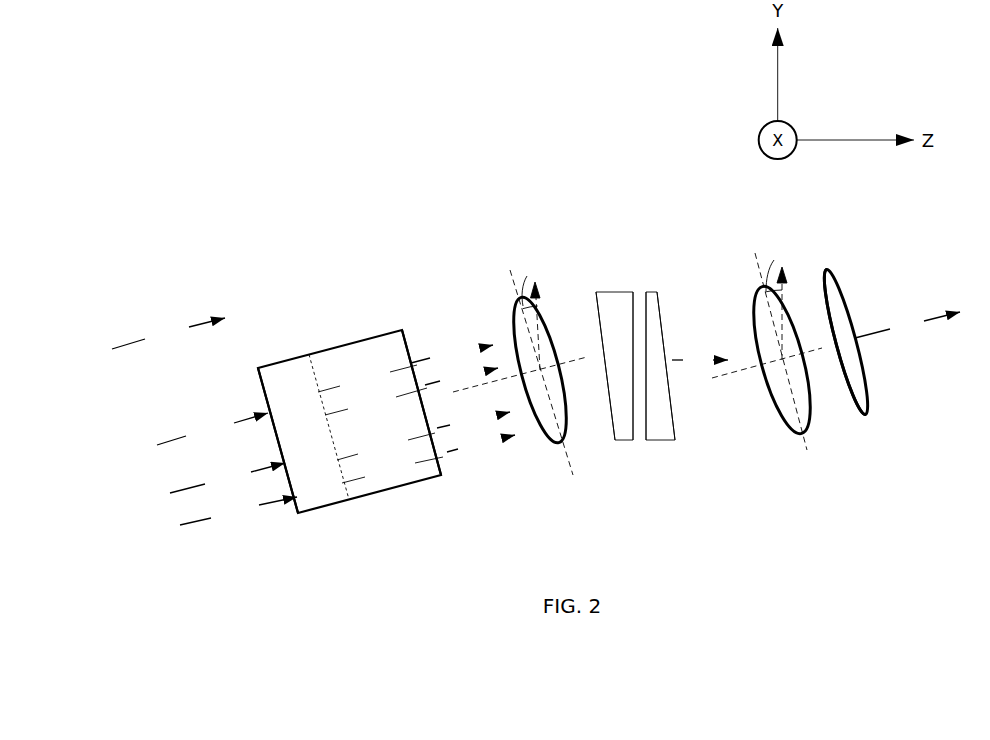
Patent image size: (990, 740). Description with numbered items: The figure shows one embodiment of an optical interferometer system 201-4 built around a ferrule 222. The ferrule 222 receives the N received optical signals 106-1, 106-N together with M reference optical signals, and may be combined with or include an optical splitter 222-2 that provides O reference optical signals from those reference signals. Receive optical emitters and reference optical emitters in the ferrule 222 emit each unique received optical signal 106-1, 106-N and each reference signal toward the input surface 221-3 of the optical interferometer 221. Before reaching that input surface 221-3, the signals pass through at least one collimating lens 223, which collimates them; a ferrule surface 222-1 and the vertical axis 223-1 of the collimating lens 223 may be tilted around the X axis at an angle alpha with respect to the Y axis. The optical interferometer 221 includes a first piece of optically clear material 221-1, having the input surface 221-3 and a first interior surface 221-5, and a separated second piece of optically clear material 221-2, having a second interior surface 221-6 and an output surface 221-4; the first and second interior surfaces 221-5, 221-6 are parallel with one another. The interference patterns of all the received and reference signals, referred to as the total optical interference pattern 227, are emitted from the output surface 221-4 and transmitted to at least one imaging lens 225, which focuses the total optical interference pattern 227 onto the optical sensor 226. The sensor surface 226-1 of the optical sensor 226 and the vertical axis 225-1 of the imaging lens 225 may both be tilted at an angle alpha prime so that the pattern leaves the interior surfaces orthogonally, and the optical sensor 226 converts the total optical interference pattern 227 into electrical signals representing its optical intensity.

The optical interferometer system 201-4 is at (630, 144).
The received optical signal 106-1 is at (331, 417).
The received optical signal 106-N is at (345, 467).
The ferrule 222 is at (333, 348).
The ferrule surface 222-1 is at (410, 343).
The optical splitter 222-2 is at (286, 440).
The collimating lens 223 is at (557, 446).
The vertical axis 223-1 is at (513, 285).
The optical interferometer 221 is at (648, 370).
The first piece of optically clear material 221-1 is at (597, 292).
The second piece of optically clear material 221-2 is at (664, 441).
The input surface 221-3 is at (594, 304).
The output surface 221-4 is at (663, 308).
The first interior surface 221-5 is at (634, 300).
The second interior surface 221-6 is at (645, 440).
The imaging lens 225 is at (757, 316).
The vertical axis 225-1 is at (755, 262).
The optical sensor 226 is at (827, 268).
The sensor surface 226-1 is at (848, 370).
The total optical interference pattern 227 is at (706, 352).